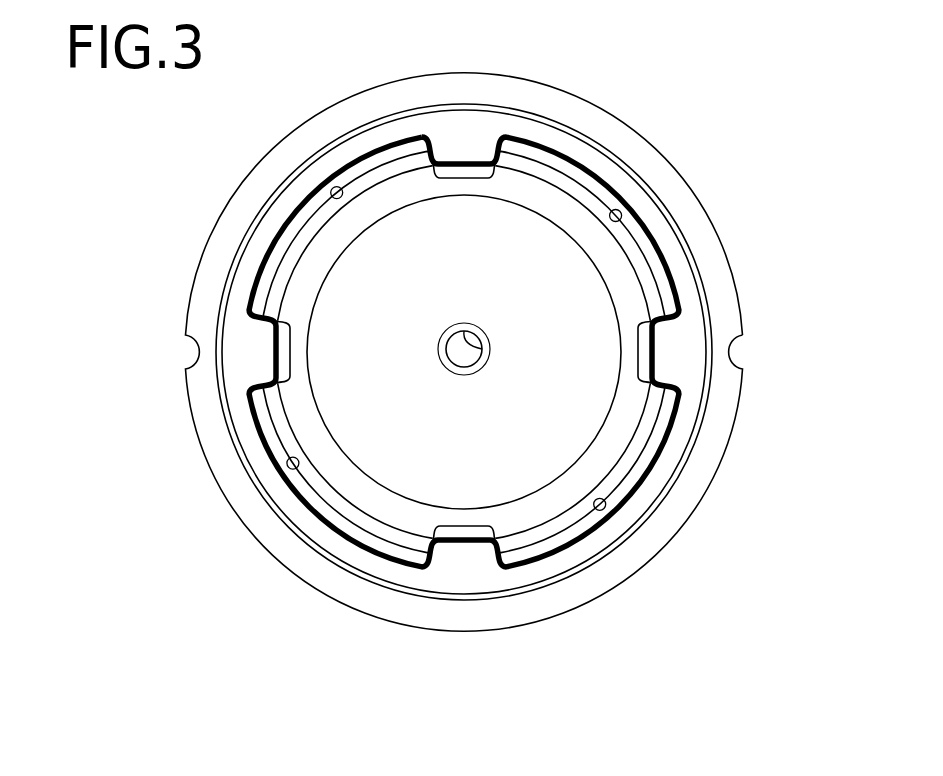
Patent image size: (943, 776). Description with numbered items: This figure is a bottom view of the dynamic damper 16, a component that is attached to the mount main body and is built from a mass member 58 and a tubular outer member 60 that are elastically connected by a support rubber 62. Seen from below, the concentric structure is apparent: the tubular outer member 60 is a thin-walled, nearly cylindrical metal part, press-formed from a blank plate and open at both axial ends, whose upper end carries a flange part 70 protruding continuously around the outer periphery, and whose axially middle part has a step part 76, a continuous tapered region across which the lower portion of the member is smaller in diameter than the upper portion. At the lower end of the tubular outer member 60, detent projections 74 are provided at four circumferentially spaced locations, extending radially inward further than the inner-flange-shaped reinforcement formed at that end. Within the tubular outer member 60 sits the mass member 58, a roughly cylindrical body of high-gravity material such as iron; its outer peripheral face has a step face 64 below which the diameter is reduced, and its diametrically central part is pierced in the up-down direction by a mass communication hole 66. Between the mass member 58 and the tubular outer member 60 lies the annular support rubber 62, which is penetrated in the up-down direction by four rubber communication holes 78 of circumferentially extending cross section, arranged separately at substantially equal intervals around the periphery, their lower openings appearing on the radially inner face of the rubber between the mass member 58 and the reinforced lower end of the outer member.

The dynamic damper 16 is at (688, 110).
The mass member 58 is at (392, 498).
The tubular outer member 60 is at (260, 552).
The support rubber 62 is at (642, 275).
The step face 64 is at (315, 268).
The mass communication hole 66 is at (486, 348).
The flange part 70 is at (223, 453).
The detent projections 74 is at (462, 155).
The step part 76 is at (670, 487).
The rubber communication holes 78 is at (343, 197).